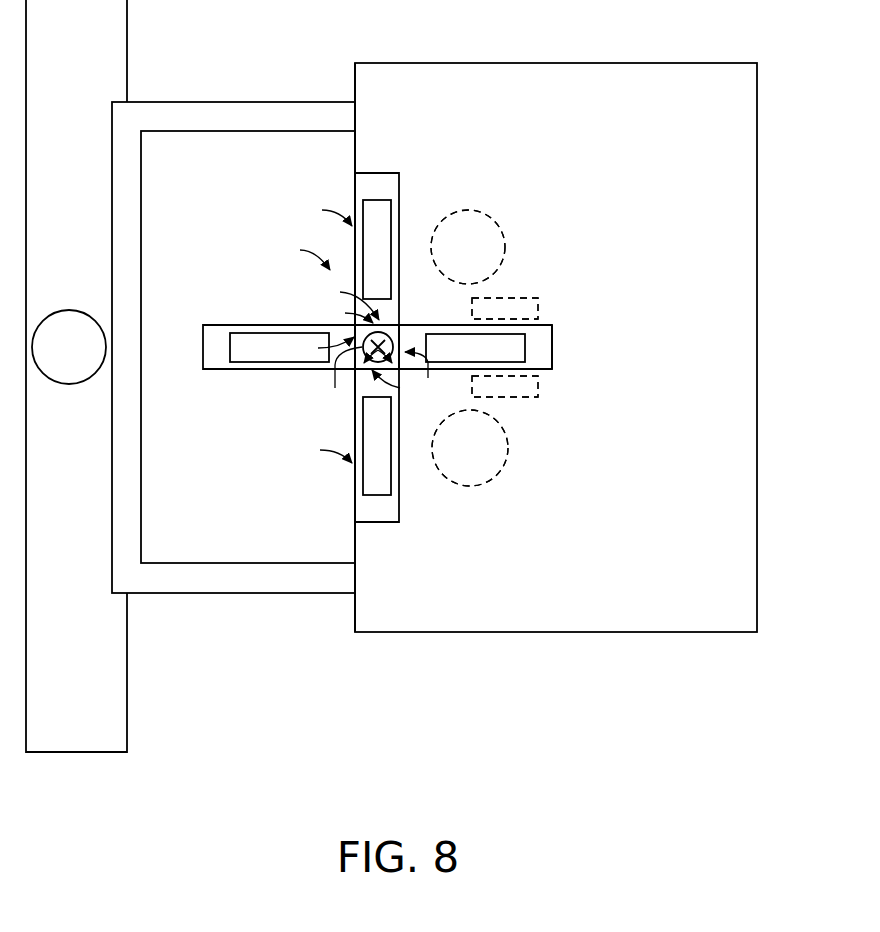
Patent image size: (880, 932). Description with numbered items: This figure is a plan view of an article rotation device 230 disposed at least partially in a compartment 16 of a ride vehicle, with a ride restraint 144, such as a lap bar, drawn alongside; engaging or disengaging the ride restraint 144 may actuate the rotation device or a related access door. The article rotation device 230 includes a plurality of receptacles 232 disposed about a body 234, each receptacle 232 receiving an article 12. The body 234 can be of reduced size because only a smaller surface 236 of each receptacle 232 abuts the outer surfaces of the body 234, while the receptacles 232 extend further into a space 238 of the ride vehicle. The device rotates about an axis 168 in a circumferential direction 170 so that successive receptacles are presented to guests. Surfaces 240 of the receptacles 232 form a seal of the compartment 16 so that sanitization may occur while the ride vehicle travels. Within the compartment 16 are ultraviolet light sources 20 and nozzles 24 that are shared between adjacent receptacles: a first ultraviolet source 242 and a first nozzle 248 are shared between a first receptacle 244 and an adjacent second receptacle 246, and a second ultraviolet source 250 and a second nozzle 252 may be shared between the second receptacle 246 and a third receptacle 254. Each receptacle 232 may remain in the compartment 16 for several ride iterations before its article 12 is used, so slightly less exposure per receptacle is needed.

The compartment 16 is at (645, 63).
The ride restraint 144 is at (229, 582).
The space 238 is at (167, 188).
The receptacles 232 is at (375, 184).
The article 12 is at (380, 218).
The first receptacle 244 is at (390, 186).
The third receptacle 254 is at (390, 516).
The second receptacle 246 is at (545, 330).
The body 234 is at (392, 332).
The surfaces 240 is at (322, 210).
The article rotation device 230 is at (300, 250).
The smaller surface 236 is at (340, 292).
The circumferential direction 170 is at (345, 313).
The axis 168 is at (338, 380).
The first ultraviolet source 242 is at (498, 221).
The second ultraviolet source 250 is at (508, 450).
The ultraviolet light sources 20 is at (506, 248).
The first nozzle 248 is at (505, 297).
The second nozzle 252 is at (498, 398).
The nozzles 24 is at (538, 310).